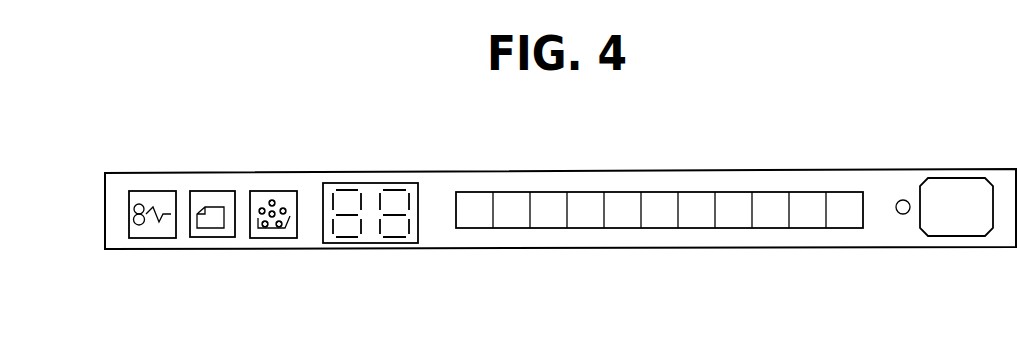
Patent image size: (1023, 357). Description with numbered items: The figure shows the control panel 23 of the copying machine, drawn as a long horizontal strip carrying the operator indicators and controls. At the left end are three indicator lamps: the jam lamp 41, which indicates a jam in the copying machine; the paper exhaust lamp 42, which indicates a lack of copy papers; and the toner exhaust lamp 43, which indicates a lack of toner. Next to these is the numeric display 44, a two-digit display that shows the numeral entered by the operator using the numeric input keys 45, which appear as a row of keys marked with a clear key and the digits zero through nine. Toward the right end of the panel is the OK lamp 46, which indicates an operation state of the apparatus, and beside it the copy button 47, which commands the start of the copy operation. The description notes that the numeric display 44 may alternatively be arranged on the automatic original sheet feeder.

The control panel 23 is at (908, 249).
The jam lamp 41 is at (149, 191).
The paper exhaust lamp 42 is at (207, 191).
The toner exhaust lamp 43 is at (268, 191).
The numeric display 44 is at (367, 183).
The numeric input keys 45 is at (872, 161).
The OK lamp 46 is at (903, 200).
The copy button 47 is at (958, 178).